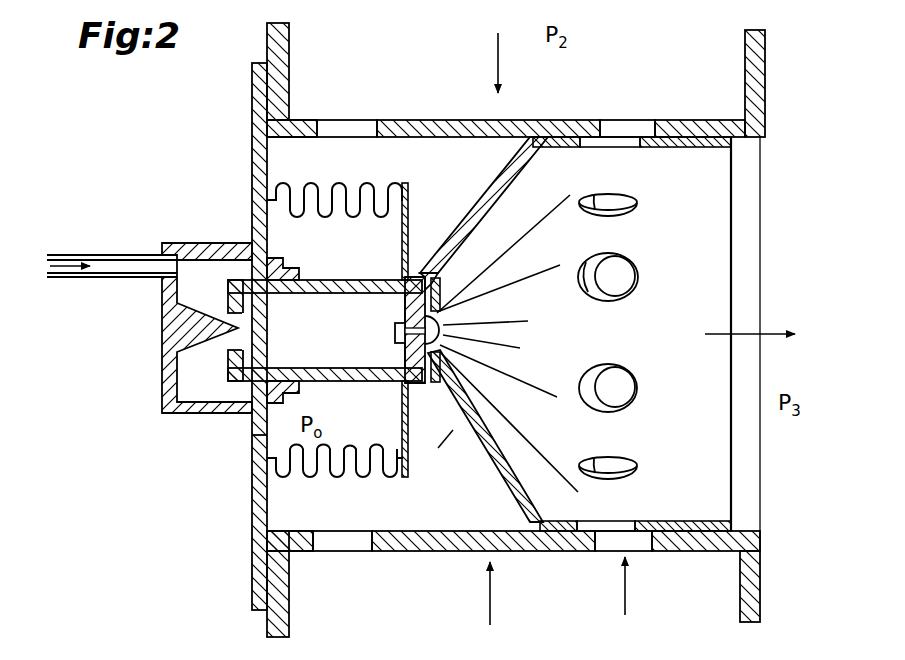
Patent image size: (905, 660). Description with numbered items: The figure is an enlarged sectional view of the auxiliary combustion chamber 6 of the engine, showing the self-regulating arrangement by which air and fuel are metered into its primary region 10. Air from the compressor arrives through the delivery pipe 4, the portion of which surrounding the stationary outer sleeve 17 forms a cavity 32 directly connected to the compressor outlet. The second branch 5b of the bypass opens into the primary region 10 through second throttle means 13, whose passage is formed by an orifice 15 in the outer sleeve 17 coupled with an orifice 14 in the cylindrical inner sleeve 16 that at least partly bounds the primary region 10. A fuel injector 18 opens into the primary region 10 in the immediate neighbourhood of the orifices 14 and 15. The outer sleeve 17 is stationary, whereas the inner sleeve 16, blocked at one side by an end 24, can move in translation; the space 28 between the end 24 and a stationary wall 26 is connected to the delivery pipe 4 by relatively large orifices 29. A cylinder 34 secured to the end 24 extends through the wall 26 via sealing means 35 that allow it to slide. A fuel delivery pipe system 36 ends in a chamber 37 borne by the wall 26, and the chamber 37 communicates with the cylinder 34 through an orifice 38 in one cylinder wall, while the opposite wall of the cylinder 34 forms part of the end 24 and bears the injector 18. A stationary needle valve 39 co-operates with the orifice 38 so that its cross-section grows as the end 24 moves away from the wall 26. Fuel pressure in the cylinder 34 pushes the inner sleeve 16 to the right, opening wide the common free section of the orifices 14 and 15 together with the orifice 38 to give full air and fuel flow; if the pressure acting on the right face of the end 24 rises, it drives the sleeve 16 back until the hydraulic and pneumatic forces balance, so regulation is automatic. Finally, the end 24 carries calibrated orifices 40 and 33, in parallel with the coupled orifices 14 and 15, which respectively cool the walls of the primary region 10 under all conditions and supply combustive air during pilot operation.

The delivery pipe 4 is at (267, 28).
The auxiliary combustion chamber 6 is at (707, 112).
The second branch of the bypass 5b is at (769, 245).
The primary region 10 is at (677, 346).
The second throttle means 13 is at (574, 591).
The orifice in the inner sleeve 14 is at (613, 144).
The orifice in the outer sleeve 15 is at (620, 125).
The inner sleeve 16 is at (668, 521).
The outer sleeve 17 is at (411, 120).
The fuel injector 18 is at (395, 334).
The end 24 is at (503, 480).
The stationary wall 26 is at (252, 506).
The space 28 is at (388, 518).
The orifices 29 is at (337, 120).
The cavity 32 is at (352, 55).
The calibrated orifice 33 is at (427, 388).
The cylinder 34 is at (358, 280).
The sealing means 35 is at (270, 252).
The fuel delivery pipe system 36 is at (106, 252).
The chamber 37 is at (192, 382).
The orifice 38 is at (243, 322).
The needle valve 39 is at (214, 282).
The calibrated orifice 40 is at (480, 460).